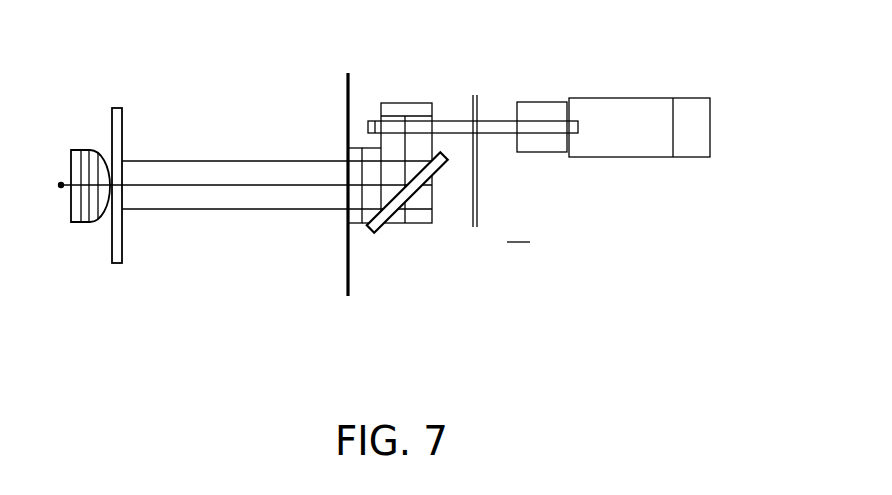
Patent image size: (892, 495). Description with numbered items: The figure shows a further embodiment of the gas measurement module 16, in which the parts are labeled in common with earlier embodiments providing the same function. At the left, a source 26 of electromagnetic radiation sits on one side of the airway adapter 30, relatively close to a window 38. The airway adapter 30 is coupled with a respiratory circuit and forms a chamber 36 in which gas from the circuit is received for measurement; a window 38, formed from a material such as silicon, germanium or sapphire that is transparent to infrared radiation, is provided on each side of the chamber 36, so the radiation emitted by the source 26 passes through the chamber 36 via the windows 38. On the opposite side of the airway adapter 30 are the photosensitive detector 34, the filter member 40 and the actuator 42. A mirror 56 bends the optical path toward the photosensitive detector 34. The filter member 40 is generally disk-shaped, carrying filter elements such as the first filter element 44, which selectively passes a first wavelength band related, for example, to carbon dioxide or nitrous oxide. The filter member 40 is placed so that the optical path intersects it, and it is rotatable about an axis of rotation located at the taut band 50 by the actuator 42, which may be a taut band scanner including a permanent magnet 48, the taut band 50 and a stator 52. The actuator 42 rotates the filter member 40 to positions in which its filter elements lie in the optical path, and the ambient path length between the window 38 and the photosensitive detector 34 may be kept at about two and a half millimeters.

The gas measurement module 16 is at (145, 359).
The source 26 is at (63, 248).
The airway adapter 30 is at (219, 303).
The photosensitive detector 34 is at (407, 103).
The chamber 36 is at (240, 240).
The window 38 is at (122, 118).
The filter member 40 is at (461, 120).
The actuator 42 is at (605, 240).
The first filter element 44 is at (436, 124).
The permanent magnet 48 is at (541, 103).
The taut band 50 is at (477, 222).
The stator 52 is at (687, 107).
The mirror 56 is at (402, 203).